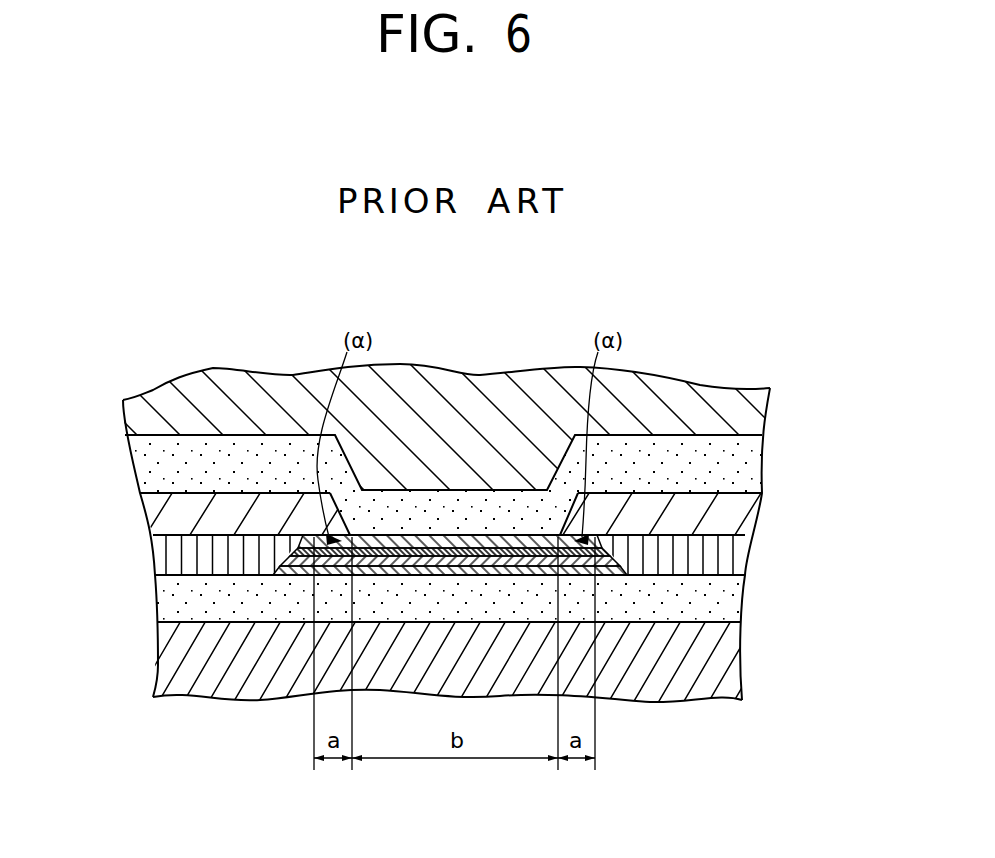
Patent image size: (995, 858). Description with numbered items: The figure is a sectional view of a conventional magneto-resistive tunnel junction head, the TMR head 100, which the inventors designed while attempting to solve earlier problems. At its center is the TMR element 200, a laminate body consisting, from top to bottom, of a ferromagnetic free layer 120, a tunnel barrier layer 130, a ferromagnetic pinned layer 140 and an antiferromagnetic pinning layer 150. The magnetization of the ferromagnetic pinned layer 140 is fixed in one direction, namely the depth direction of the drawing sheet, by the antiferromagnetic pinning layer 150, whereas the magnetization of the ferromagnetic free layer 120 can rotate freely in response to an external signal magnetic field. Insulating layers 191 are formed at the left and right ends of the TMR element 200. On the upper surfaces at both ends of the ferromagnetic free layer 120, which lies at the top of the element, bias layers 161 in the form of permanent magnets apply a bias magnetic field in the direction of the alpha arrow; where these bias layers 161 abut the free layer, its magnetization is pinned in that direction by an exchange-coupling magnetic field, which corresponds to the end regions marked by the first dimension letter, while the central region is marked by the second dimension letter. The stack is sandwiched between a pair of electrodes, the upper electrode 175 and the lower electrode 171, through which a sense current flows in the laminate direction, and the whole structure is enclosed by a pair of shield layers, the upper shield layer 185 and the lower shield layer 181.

The TMR head 100 is at (654, 347).
The upper shield layer 185 is at (135, 413).
The upper electrode 175 is at (140, 462).
The bias layer 161 is at (170, 513).
The insulating layer 191 is at (170, 555).
The lower electrode 171 is at (170, 598).
The lower shield layer 181 is at (173, 658).
The ferromagnetic free layer 120 is at (604, 543).
The tunnel barrier layer 130 is at (624, 552).
The ferromagnetic pinned layer 140 is at (624, 565).
The antiferromagnetic pinning layer 150 is at (622, 577).
The TMR element 200 is at (580, 577).